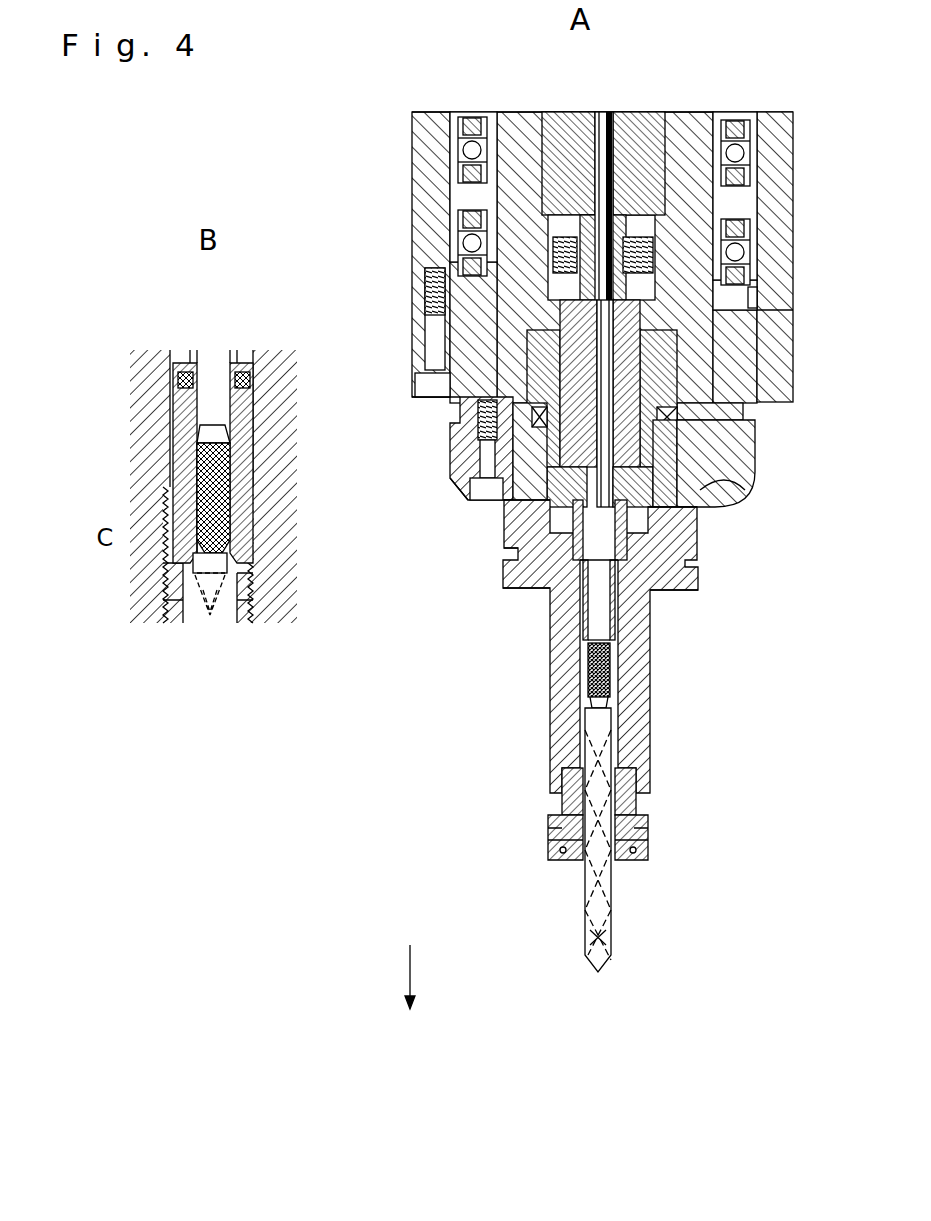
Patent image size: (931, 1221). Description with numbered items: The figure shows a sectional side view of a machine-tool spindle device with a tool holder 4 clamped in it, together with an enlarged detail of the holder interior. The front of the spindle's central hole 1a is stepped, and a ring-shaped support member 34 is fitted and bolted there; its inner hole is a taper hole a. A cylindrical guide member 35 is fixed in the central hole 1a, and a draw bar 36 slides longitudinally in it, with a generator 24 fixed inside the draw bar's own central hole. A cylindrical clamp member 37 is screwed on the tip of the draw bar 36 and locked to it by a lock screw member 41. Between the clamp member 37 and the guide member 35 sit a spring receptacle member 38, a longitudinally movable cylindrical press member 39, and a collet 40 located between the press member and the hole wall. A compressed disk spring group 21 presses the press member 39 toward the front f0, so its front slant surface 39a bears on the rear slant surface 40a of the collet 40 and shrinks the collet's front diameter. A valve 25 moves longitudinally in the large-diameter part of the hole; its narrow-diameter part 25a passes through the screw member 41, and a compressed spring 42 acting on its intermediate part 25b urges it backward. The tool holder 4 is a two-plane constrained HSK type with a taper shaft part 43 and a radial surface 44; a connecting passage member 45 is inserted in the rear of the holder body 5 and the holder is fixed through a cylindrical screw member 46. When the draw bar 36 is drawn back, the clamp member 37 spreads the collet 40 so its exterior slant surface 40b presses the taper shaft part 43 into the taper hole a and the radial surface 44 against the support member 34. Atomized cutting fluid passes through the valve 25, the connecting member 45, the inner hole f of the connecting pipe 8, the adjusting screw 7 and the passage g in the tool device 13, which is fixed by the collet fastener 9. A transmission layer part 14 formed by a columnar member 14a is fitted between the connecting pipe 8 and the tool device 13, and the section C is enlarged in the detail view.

The central hole 1a is at (641, 130).
The tool holder 4 is at (512, 733).
The holder body 5 is at (650, 600).
The adjusting screw 7 is at (623, 692).
The connecting pipe 8 is at (580, 603).
The collet fastener 9 is at (650, 838).
The tool device 13 is at (583, 912).
The transmission layer part 14 is at (590, 660).
The columnar member 14a is at (237, 510).
The disk spring group 21 is at (560, 300).
The generator 24 is at (425, 268).
The valve 25 is at (747, 343).
The narrow-diameter part 25a is at (440, 420).
The intermediate part 25b is at (430, 373).
The support member 34 is at (453, 480).
The guide member 35 is at (557, 118).
The draw bar 36 is at (622, 118).
The clamp member 37 is at (702, 532).
The spring receptacle member 38 is at (722, 232).
The press member 39 is at (455, 218).
The front slant surface 39a is at (753, 297).
The collet 40 is at (462, 500).
The rear slant surface 40a is at (440, 297).
The exterior slant surface 40b is at (753, 453).
The lock screw member 41 is at (458, 410).
The compressed spring 42 is at (505, 345).
The taper shaft part 43 is at (448, 452).
The radial surface 44 is at (732, 490).
The connecting passage member 45 is at (505, 572).
The cylindrical screw member 46 is at (686, 563).
The taper hole a is at (507, 533).
The inner hole f is at (600, 628).
The holder inside passage g is at (607, 947).
The front f0 is at (405, 998).
The section C is at (197, 562).